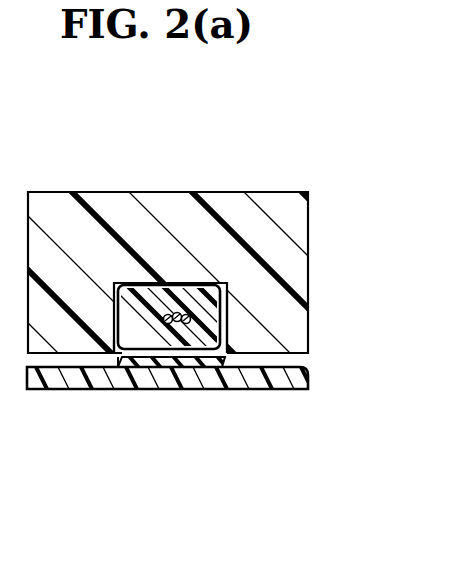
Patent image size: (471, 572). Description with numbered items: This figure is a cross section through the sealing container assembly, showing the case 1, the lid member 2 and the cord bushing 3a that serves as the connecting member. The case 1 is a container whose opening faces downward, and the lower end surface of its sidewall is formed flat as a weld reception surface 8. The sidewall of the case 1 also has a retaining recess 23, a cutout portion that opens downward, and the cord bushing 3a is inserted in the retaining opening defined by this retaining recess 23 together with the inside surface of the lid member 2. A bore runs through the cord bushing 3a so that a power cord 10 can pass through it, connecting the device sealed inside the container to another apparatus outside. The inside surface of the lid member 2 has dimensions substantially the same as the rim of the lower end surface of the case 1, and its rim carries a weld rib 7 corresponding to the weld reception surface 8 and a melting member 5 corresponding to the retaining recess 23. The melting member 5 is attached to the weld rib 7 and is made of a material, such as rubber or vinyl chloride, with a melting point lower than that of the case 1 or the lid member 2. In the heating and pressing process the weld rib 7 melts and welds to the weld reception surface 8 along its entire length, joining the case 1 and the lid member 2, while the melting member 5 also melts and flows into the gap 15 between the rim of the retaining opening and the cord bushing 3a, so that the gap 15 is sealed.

The case 1 is at (232, 205).
The cord bushing 3a is at (130, 283).
The weld reception surface 8 is at (200, 321).
The power cord 10 is at (187, 313).
The retaining recess 23 is at (227, 338).
The melting member 5 is at (163, 390).
The lid member 2 is at (238, 390).
The weld rib 7 is at (114, 348).
The gap 15 is at (124, 356).